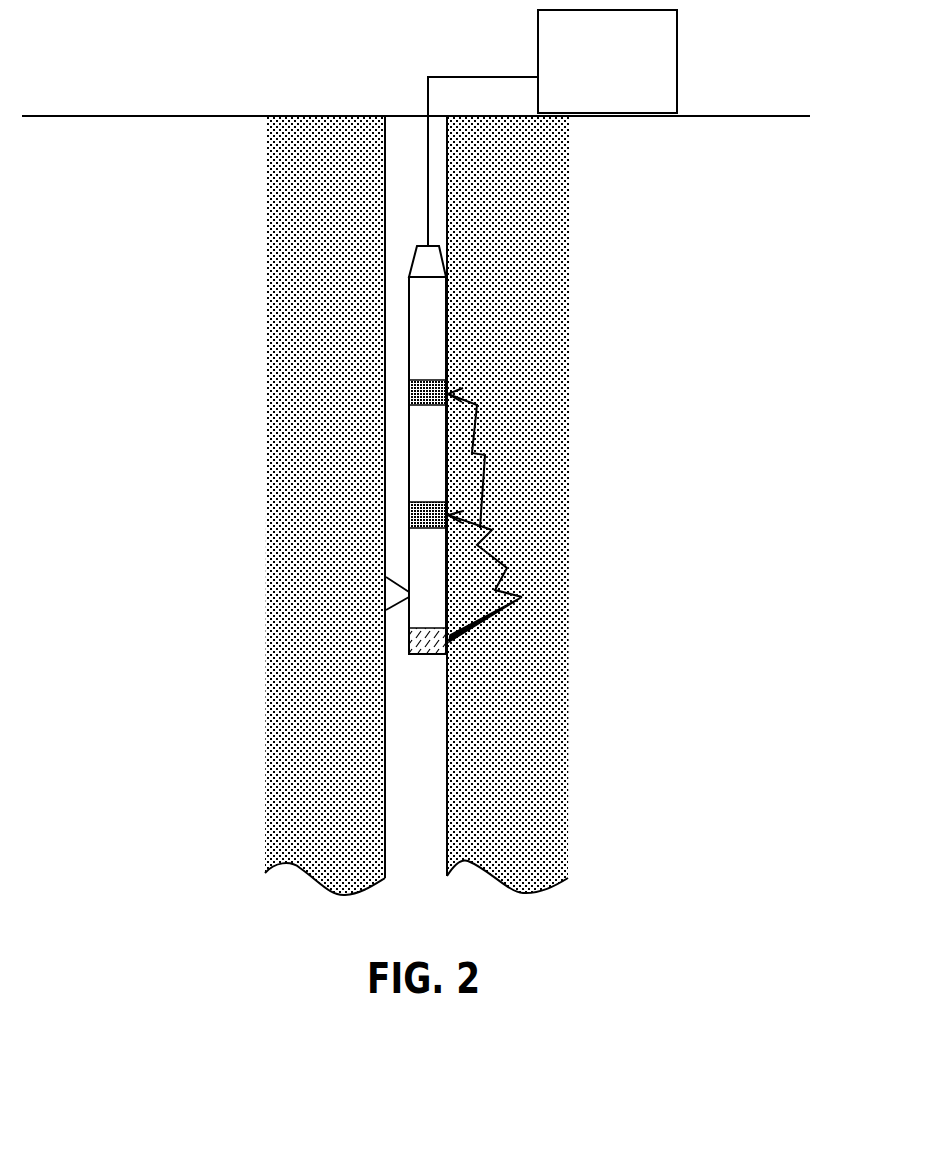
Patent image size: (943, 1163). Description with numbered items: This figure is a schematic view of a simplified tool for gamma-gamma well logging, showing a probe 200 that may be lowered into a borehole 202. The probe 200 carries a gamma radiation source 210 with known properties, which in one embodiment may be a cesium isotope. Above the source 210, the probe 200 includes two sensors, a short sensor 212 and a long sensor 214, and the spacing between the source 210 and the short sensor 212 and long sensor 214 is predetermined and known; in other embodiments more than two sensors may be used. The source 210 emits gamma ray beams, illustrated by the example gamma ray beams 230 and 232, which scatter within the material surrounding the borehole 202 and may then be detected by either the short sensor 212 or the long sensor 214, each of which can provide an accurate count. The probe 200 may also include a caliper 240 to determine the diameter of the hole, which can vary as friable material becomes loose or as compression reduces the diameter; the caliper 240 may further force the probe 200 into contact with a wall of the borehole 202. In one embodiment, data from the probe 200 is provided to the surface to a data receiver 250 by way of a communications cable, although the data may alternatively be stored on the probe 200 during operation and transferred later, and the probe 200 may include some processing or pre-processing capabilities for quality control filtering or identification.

The probe 200 is at (442, 335).
The borehole 202 is at (427, 732).
The gamma radiation source 210 is at (410, 640).
The short sensor 212 is at (412, 523).
The long sensor 214 is at (413, 393).
The gamma ray beam 230 is at (458, 523).
The gamma ray beam 232 is at (487, 455).
The caliper 240 is at (386, 610).
The data receiver 250 is at (552, 128).